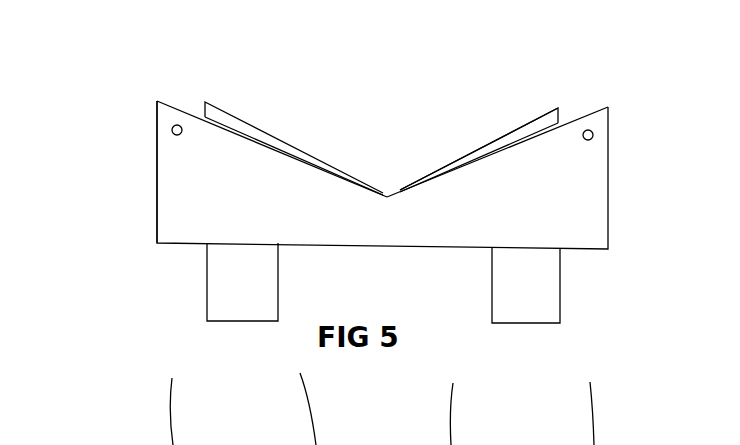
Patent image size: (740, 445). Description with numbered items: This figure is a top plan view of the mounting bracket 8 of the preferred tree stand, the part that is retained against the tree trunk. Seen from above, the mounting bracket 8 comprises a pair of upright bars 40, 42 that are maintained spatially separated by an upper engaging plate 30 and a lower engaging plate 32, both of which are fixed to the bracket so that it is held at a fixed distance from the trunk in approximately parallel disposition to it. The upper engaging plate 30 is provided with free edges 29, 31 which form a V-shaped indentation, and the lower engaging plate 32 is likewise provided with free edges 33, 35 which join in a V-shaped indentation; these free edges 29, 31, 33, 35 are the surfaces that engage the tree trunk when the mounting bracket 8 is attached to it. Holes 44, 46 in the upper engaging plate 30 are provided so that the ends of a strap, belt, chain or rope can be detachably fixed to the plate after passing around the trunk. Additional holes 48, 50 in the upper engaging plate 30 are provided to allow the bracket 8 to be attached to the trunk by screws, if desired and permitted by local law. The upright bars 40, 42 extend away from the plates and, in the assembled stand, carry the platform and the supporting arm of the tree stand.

The mounting bracket 8 is at (618, 230).
The free edge 29 is at (173, 104).
The free edge 31 is at (585, 115).
The upper engaging plate 30 is at (157, 173).
The free edge 33 is at (283, 140).
The lower engaging plate 32 is at (518, 137).
The free edge 35 is at (470, 152).
The hole 44 is at (172, 130).
The hole 46 is at (593, 135).
The upright bar 40 is at (207, 321).
The upright bar 42 is at (560, 323).
The hole 48 is at (240, 322).
The hole 50 is at (528, 325).